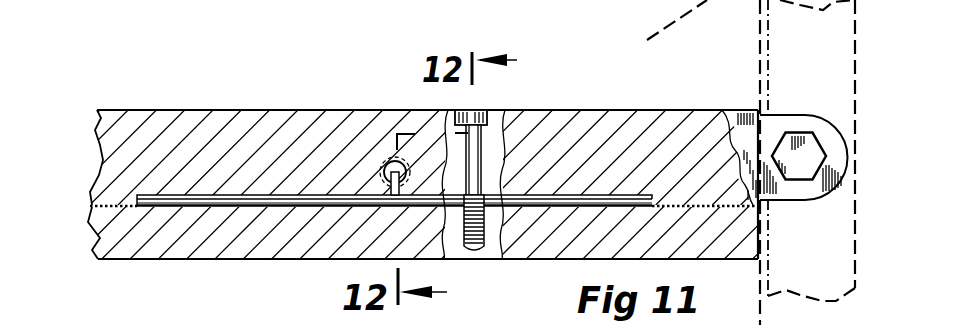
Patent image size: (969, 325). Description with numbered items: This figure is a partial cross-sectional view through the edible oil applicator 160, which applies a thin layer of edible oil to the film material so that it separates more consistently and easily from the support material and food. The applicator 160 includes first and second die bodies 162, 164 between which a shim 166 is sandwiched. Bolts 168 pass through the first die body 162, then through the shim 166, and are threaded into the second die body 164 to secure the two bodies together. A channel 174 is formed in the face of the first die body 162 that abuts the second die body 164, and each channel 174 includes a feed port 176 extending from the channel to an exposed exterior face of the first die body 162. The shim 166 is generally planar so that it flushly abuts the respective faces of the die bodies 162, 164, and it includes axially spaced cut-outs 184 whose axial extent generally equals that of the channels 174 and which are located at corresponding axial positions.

The edible oil applicator 160 is at (195, 67).
The first die body 162 is at (98, 162).
The second die body 164 is at (98, 232).
The shim 166 is at (80, 207).
The bolt 168 is at (473, 110).
The channel 174 is at (171, 200).
The feed port 176 is at (389, 160).
The cut-out 184 is at (263, 208).